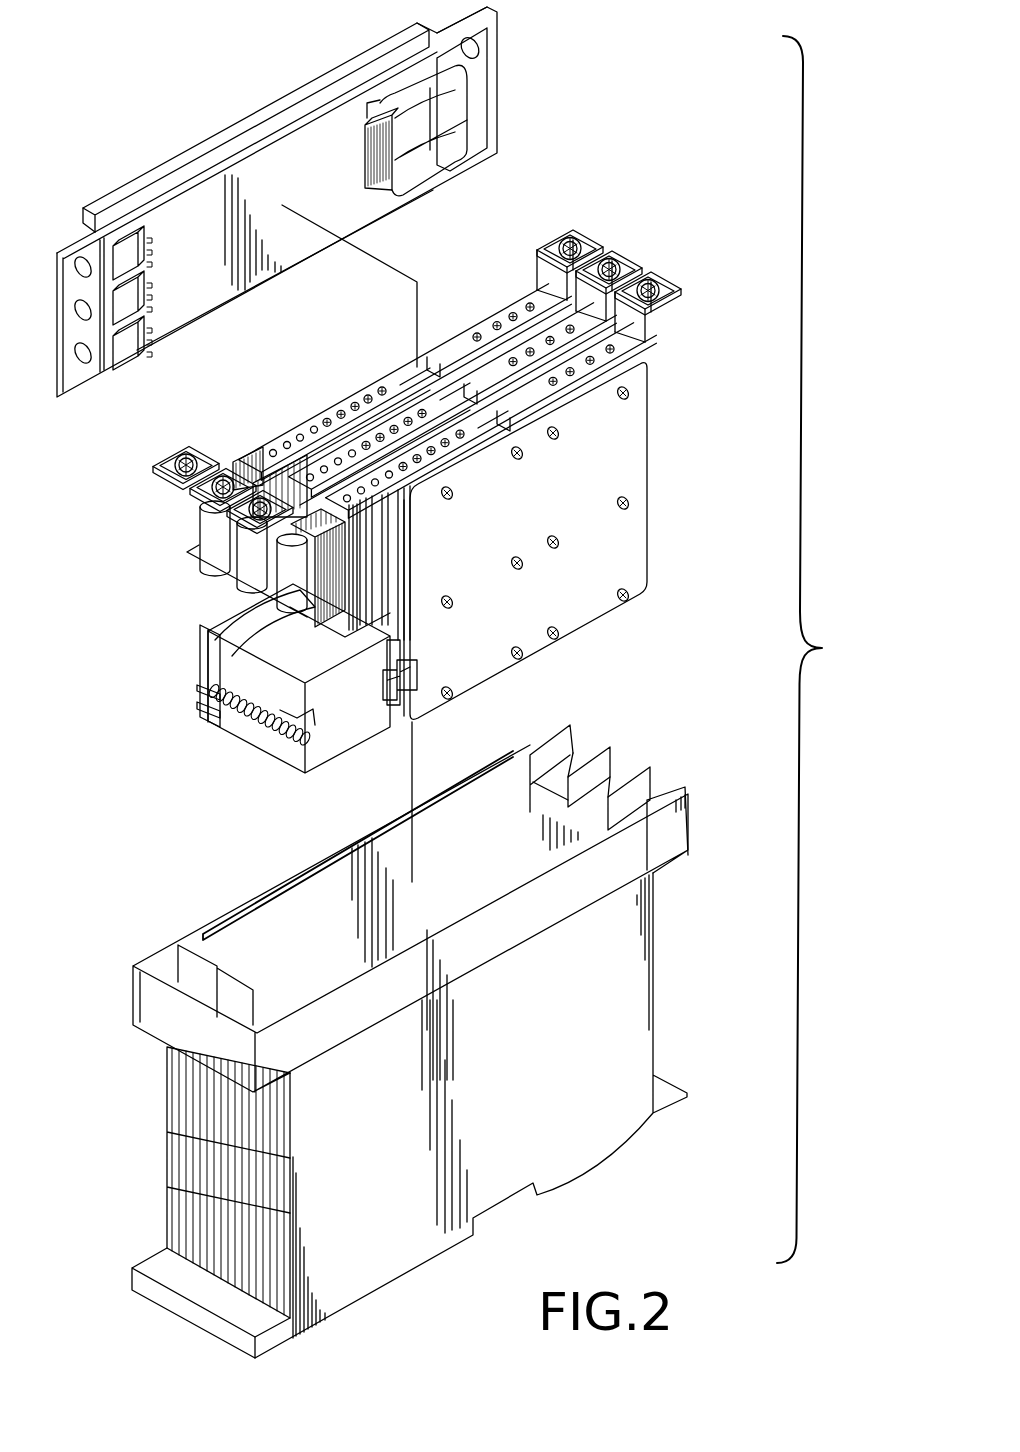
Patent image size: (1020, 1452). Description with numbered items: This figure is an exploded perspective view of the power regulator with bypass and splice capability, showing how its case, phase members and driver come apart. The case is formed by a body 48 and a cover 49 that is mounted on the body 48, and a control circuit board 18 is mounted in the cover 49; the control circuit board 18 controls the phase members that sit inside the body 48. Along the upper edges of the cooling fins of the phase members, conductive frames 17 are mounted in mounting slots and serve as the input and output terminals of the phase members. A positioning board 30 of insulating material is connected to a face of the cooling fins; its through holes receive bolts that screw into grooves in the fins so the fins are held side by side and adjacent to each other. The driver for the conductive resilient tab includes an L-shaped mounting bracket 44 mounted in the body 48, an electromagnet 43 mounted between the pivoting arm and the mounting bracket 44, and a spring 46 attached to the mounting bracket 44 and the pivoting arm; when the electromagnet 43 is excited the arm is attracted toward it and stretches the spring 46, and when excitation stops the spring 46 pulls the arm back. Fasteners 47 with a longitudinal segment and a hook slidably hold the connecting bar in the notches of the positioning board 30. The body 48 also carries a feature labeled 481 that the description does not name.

The conductive frame 17 is at (160, 463).
The control circuit board 18 is at (223, 280).
The positioning board 30 is at (632, 555).
The electromagnet 43 is at (215, 650).
The mounting bracket 44 is at (338, 745).
The spring 46 is at (243, 710).
The fastener 47 is at (262, 636).
The body 48 is at (622, 972).
The cover 49 is at (243, 116).
The rail 481 is at (350, 908).